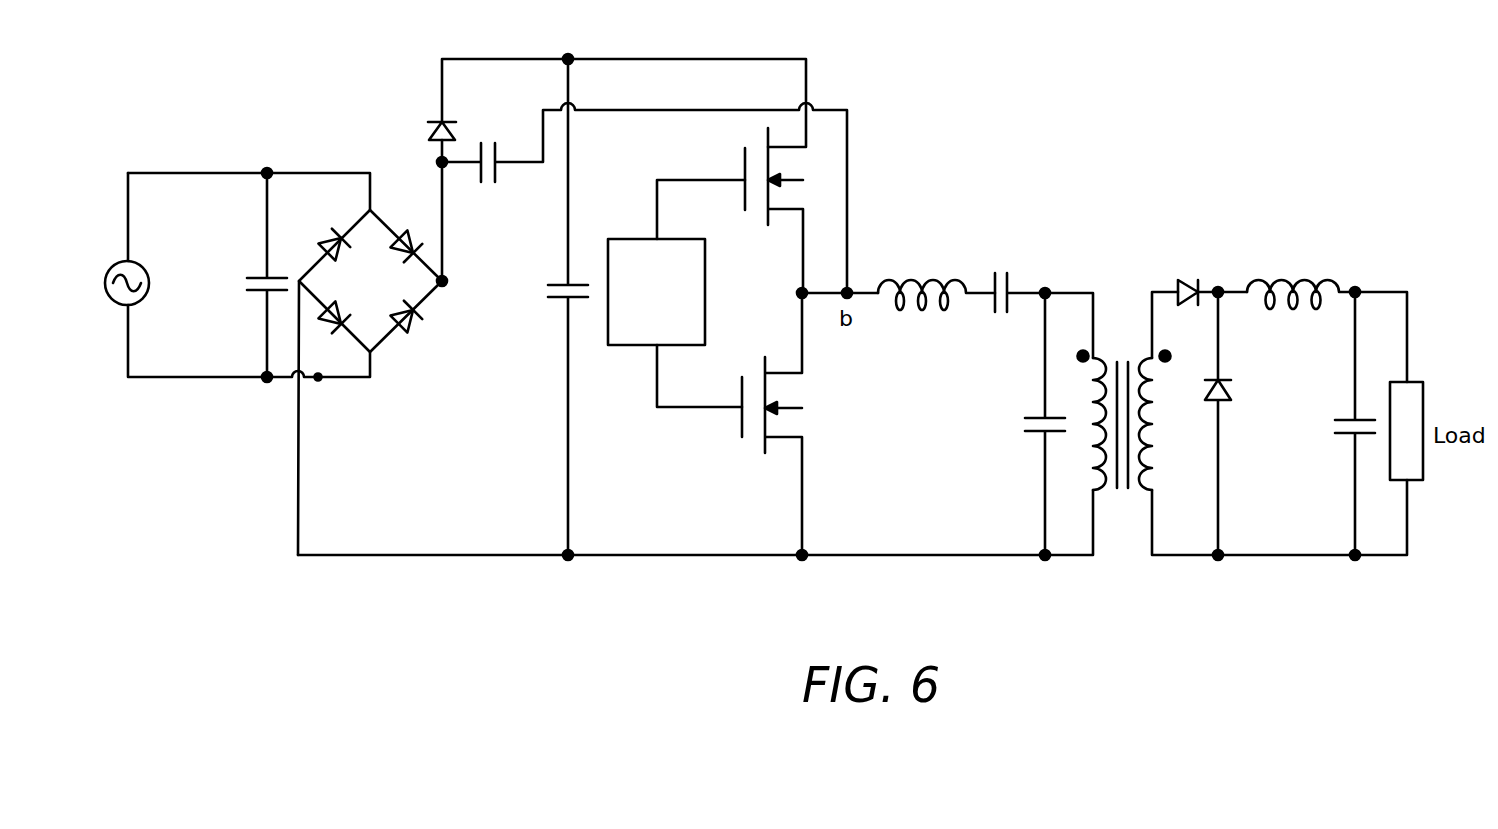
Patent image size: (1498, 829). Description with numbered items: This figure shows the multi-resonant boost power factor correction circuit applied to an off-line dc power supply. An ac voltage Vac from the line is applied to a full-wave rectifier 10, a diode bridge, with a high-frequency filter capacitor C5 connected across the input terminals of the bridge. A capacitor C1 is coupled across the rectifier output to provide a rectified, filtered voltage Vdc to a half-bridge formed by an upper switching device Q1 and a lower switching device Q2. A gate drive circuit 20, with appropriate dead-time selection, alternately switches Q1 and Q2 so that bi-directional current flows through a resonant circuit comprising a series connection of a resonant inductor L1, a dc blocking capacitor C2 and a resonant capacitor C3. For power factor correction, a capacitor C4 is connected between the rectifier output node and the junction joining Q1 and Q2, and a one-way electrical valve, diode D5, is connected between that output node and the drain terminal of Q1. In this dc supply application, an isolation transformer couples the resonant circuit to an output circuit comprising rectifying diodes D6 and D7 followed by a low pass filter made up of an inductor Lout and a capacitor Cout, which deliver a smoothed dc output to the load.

The full-wave rectifier 10 is at (367, 170).
The gate drive circuit 20 is at (642, 346).
The ac voltage Vac is at (138, 303).
The rectified, filtered voltage Vdc is at (623, 84).
The high-frequency filter capacitor C5 is at (256, 275).
The diode D5 is at (426, 199).
The capacitor C4 is at (644, 198).
The capacitor C1 is at (549, 307).
The upper switching device Q1 is at (748, 210).
The switching device Q2 is at (748, 424).
The resonant inductor L1 is at (936, 277).
The dc blocking capacitor C2 is at (1039, 296).
The resonant capacitor C3 is at (1028, 424).
The rectifying diode D6 is at (1210, 310).
The rectifying diode D7 is at (1198, 426).
The low pass filter inductor Lout is at (1327, 317).
The low pass filter capacitor Cout is at (1326, 426).